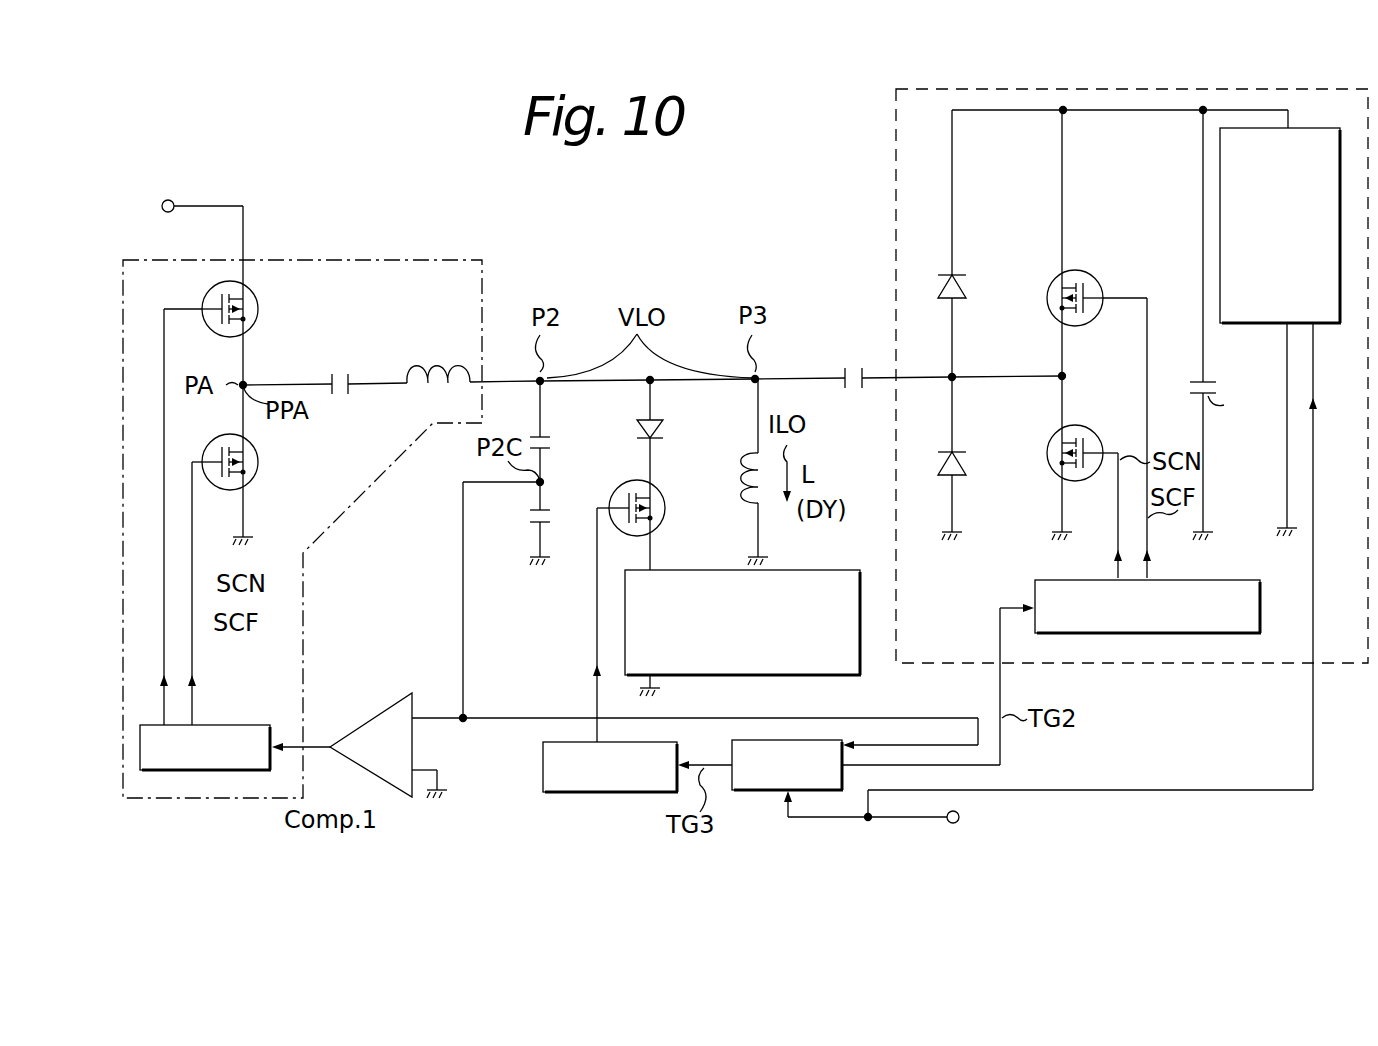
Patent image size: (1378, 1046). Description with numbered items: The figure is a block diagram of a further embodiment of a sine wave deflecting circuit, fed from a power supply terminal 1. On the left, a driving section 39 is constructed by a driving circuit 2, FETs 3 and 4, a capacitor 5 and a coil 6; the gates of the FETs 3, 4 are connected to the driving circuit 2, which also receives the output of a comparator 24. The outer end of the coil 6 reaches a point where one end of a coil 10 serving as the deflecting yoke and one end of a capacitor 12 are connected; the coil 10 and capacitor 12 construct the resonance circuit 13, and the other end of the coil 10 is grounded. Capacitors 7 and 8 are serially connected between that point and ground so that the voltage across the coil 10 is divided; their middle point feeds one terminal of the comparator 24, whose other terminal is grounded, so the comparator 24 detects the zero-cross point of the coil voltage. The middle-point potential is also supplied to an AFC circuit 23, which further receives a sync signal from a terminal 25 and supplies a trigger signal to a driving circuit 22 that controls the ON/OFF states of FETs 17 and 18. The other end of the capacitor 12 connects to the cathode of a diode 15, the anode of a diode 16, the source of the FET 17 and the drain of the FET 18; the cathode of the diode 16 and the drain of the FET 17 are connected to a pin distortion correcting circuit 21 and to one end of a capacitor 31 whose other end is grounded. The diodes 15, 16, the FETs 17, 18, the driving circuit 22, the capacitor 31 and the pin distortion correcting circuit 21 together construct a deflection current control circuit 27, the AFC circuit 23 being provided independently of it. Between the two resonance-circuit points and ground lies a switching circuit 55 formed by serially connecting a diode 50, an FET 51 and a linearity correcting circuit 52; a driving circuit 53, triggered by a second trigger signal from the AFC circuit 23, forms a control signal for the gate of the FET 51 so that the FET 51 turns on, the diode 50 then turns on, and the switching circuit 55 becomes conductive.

The power supply terminal 1 is at (162, 206).
The driving circuit 2 is at (192, 771).
The FET 3 is at (248, 285).
The FET 4 is at (250, 478).
The capacitor 5 is at (341, 372).
The coil 6 is at (441, 370).
The capacitor 7 is at (547, 432).
The capacitor 8 is at (530, 520).
The coil 10 is at (746, 479).
The capacitor 12 is at (858, 403).
The resonance circuit 13 is at (800, 357).
The diode 15 is at (958, 478).
The diode 16 is at (958, 300).
The FET 17 is at (1080, 270).
The FET 18 is at (1058, 470).
The pin distortion correcting circuit 21 is at (1320, 130).
The driving circuit 22 is at (1207, 580).
The AFC circuit 23 is at (756, 792).
The comparator 24 is at (370, 714).
The terminal 25 is at (947, 822).
The deflection current control circuit 27 is at (1158, 88).
The capacitor 31 is at (1234, 413).
The driving section 39 is at (322, 258).
The diode 50 is at (663, 434).
The FET 51 is at (612, 485).
The linearity correcting circuit 52 is at (803, 570).
The driving circuit 53 is at (606, 793).
The switching circuit 55 is at (588, 542).